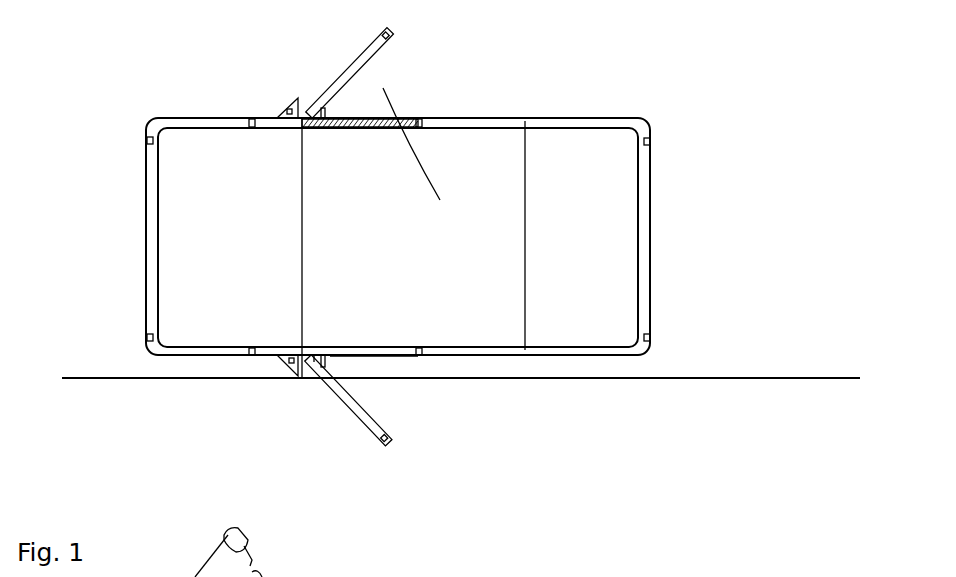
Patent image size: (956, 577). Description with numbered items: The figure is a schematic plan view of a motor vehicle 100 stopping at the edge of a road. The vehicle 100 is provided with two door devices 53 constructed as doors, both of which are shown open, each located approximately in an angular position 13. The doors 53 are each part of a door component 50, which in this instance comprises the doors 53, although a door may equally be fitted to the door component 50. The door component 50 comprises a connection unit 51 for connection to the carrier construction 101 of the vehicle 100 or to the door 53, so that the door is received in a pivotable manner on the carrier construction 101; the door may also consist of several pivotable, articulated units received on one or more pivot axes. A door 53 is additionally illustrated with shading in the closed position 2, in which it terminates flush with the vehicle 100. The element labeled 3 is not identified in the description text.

The motor vehicle 100 is at (119, 99).
The frame 3 is at (496, 59).
The closed position 2 is at (427, 139).
The angular position 13 is at (387, 90).
The door component 50 is at (338, 151).
The connection unit 51 is at (312, 352).
The door device 53 is at (345, 65).
The carrier construction 101 is at (370, 357).